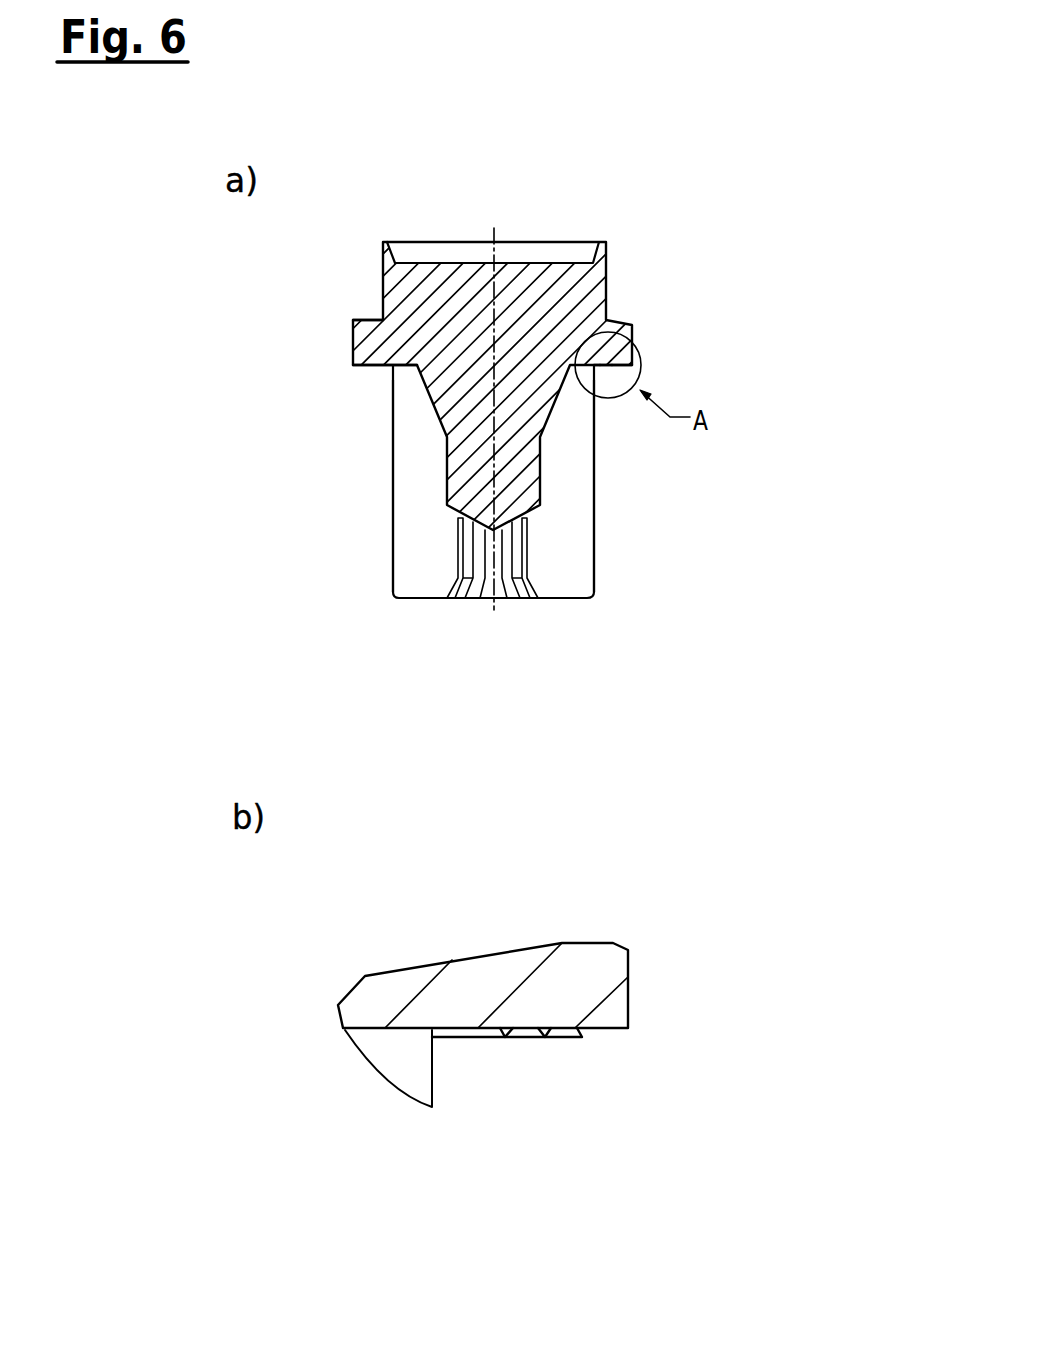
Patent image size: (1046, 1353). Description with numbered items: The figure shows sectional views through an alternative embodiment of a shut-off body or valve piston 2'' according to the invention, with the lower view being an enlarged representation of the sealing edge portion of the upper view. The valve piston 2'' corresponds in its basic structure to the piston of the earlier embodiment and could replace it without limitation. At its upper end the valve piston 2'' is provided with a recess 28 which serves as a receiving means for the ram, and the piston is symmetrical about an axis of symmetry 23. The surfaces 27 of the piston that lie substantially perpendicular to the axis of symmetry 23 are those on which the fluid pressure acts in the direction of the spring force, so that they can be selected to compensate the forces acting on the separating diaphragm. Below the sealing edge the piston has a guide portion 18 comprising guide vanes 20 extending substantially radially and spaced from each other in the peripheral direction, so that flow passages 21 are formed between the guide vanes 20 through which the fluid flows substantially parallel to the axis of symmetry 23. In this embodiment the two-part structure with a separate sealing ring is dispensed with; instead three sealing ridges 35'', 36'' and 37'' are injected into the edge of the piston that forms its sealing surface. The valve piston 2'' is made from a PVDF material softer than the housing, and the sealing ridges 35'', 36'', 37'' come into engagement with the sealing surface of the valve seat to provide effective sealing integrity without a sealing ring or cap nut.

The valve piston 2'' is at (437, 577).
The guide portion 18 is at (360, 475).
The guide vanes 20 is at (479, 540).
The flow passages 21 is at (506, 569).
The axis of symmetry 23 is at (495, 236).
The surfaces 27 is at (368, 318).
The recess 28 is at (458, 256).
The first sealing ridge 35'' is at (570, 794).
The second sealing ridge 36'' is at (656, 799).
The third sealing ridge 37'' is at (712, 755).